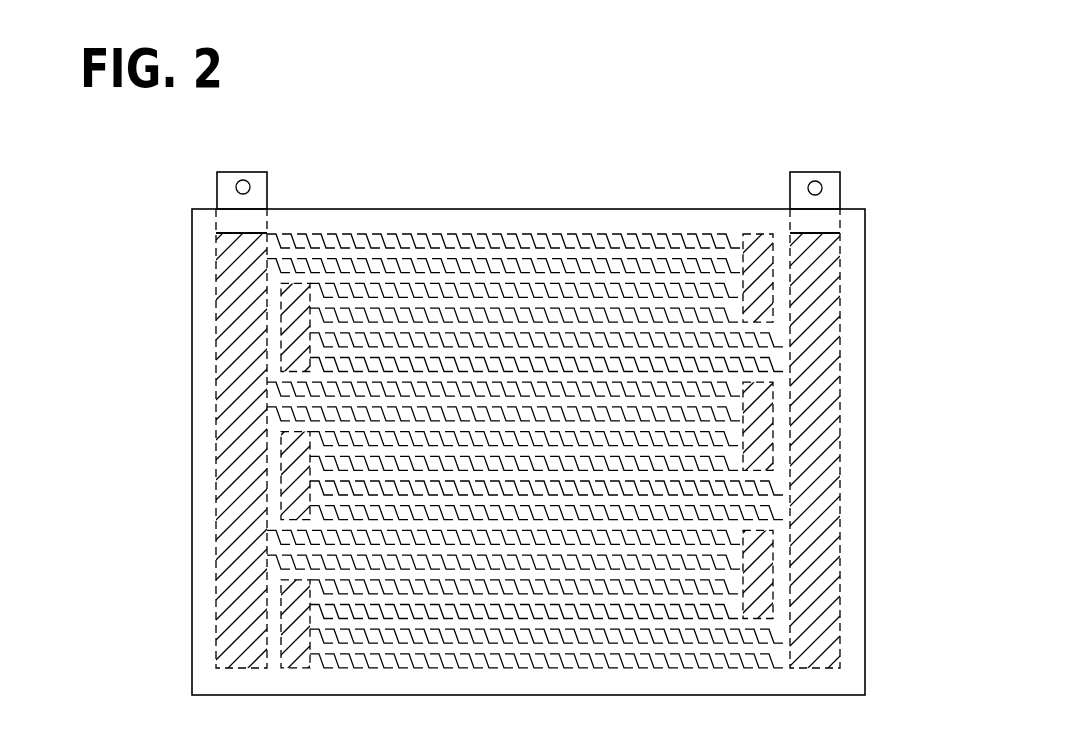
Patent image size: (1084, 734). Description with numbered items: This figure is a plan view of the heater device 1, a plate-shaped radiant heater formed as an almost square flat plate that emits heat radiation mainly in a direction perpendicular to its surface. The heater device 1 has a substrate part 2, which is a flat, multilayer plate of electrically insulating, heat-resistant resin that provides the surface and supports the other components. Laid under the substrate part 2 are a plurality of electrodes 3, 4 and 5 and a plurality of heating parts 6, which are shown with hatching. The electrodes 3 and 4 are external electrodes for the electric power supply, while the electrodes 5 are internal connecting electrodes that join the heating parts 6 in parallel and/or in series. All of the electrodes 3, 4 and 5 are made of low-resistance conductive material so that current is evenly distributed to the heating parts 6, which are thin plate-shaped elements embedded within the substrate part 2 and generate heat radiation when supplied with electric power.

The heater device 1 is at (870, 201).
The substrate part 2 is at (432, 209).
The electrode 3 is at (232, 172).
The electrode 4 is at (793, 173).
The electrode 5 is at (747, 233).
The heating part 6 is at (676, 233).